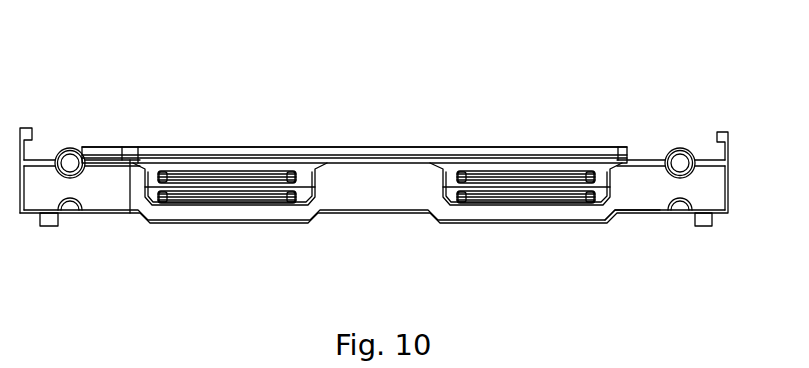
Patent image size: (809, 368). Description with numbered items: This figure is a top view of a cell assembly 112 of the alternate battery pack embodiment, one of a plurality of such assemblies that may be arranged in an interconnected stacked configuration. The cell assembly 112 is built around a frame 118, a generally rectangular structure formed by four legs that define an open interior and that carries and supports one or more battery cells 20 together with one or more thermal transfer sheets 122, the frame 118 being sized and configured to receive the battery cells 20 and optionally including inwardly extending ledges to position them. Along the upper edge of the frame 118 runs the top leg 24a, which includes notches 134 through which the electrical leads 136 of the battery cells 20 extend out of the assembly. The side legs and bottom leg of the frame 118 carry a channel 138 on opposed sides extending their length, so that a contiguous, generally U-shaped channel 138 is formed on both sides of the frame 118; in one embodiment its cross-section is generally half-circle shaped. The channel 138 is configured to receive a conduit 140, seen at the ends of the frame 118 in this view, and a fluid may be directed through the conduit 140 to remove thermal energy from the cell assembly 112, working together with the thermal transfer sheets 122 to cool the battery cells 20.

The cell assembly 112 is at (353, 92).
The thermal transfer sheet 122 is at (110, 140).
The conduit 140 is at (678, 148).
The channel 138 is at (62, 178).
The frame 118 is at (112, 224).
The notch 134 is at (175, 207).
The electrical lead 136 is at (512, 182).
The battery cell 20 is at (296, 205).
The top leg 24a is at (630, 213).